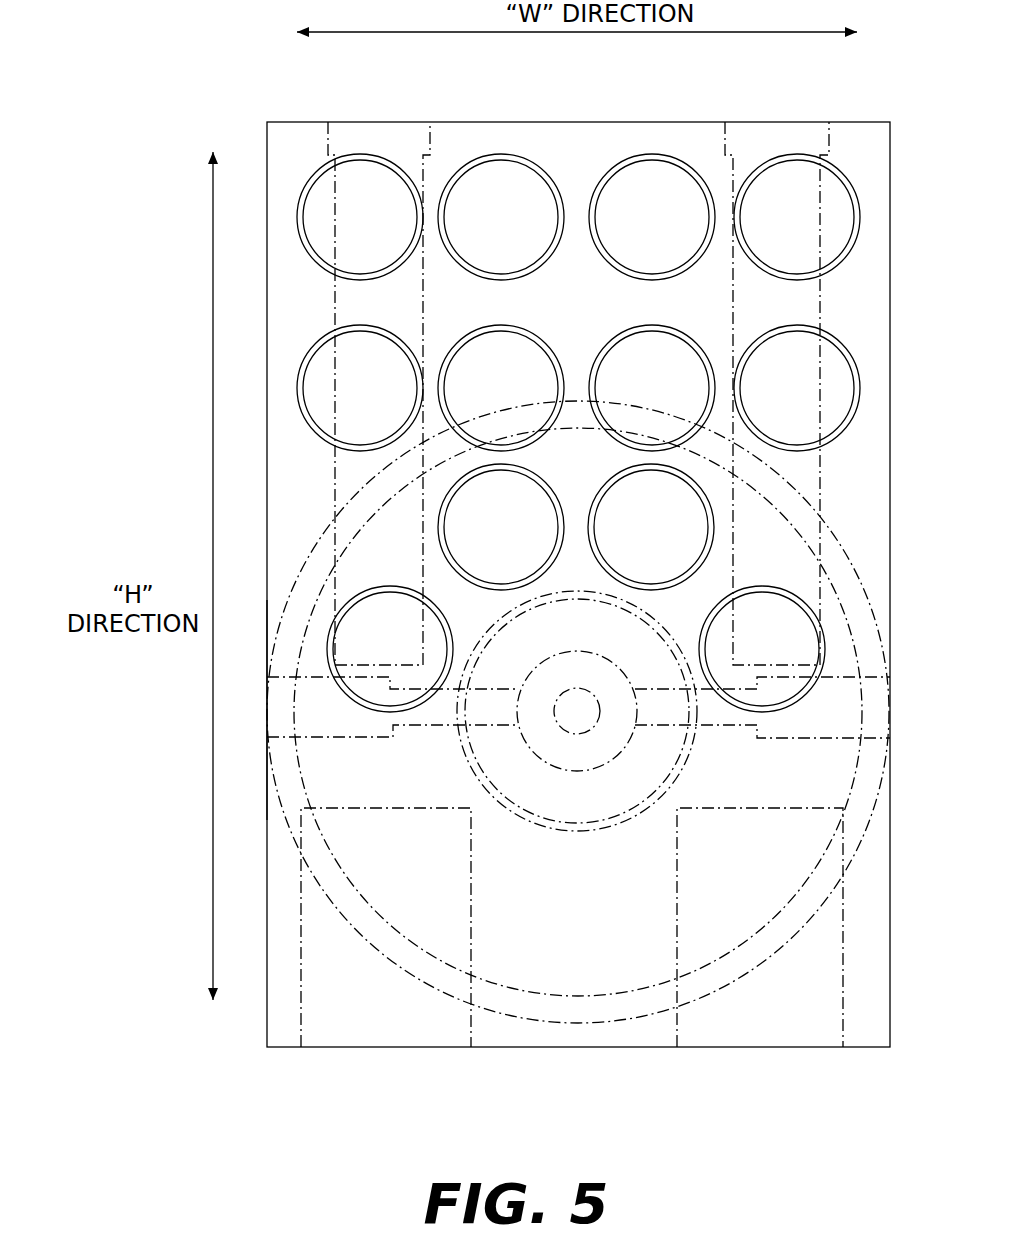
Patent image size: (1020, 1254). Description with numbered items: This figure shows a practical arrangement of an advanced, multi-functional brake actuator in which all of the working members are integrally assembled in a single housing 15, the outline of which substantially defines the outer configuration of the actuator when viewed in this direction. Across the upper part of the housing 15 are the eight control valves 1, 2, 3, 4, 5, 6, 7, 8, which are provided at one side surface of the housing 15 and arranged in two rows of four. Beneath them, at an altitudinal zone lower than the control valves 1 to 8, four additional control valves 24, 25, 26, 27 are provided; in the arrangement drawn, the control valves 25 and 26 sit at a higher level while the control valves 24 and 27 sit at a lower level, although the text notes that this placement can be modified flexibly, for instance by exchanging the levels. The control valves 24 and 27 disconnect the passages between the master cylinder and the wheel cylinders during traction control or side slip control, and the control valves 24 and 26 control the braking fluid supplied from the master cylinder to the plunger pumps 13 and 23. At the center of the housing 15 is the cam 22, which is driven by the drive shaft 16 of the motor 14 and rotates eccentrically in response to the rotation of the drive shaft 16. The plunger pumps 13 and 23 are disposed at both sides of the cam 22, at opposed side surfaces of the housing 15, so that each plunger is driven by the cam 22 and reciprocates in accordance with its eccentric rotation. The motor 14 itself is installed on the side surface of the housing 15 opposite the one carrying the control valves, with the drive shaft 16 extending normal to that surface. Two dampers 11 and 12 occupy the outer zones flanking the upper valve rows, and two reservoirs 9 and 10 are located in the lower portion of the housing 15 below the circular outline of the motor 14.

The control valve 1 is at (378, 156).
The control valve 2 is at (518, 157).
The control valve 3 is at (669, 157).
The control valve 4 is at (805, 157).
The control valve 5 is at (316, 346).
The control valve 6 is at (471, 346).
The control valve 7 is at (681, 346).
The control valve 8 is at (858, 360).
The reservoir 9 is at (796, 1053).
The reservoir 10 is at (336, 1053).
The damper 11 is at (773, 118).
The damper 12 is at (351, 118).
The plunger pump 13 is at (891, 706).
The motor 14 is at (862, 806).
The housing 15 is at (886, 960).
The drive shaft 16 is at (593, 727).
The cam 22 is at (542, 761).
The plunger pump 23 is at (268, 700).
The control valve 24 is at (392, 586).
The control valve 25 is at (438, 530).
The control valve 26 is at (596, 496).
The control valve 27 is at (762, 586).